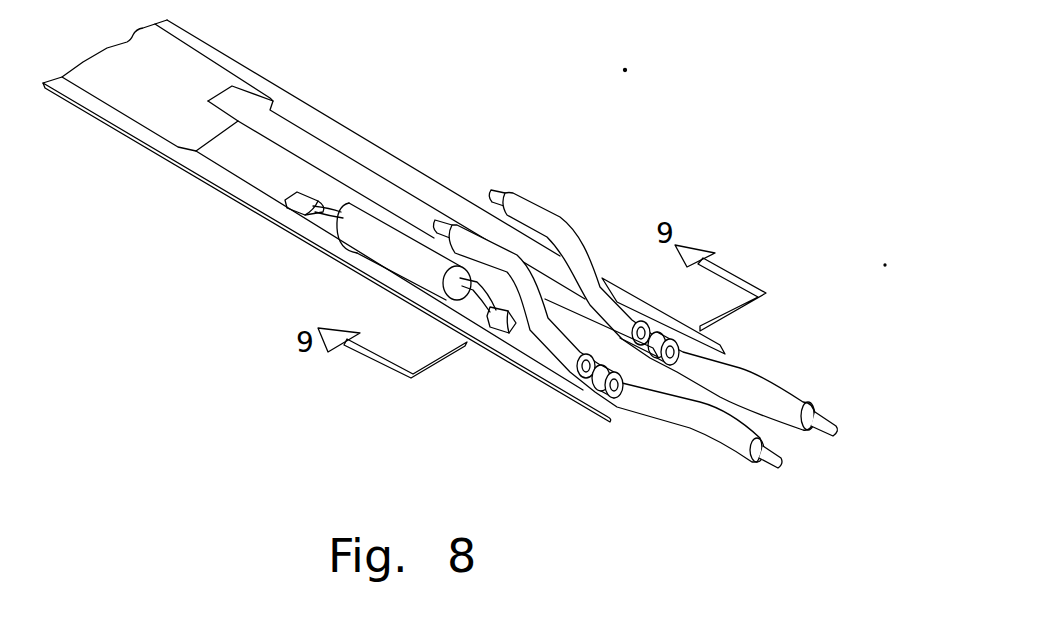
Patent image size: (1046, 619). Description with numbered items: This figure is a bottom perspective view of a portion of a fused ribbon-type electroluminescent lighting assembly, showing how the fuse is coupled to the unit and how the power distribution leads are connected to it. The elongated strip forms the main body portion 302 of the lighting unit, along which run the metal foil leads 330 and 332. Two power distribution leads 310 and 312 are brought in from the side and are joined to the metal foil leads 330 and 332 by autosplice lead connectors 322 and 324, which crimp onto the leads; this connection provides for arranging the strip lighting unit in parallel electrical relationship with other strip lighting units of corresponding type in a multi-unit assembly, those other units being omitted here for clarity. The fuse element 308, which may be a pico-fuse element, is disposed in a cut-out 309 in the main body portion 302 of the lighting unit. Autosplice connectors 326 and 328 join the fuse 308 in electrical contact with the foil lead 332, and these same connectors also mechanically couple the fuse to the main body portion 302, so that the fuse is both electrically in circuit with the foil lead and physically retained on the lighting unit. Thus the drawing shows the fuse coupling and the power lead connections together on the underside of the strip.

The main body portion 302 is at (275, 86).
The fuse element 308 is at (387, 248).
The cut-out 309 is at (407, 283).
The power distribution lead 310 is at (793, 402).
The power distribution lead 312 is at (727, 445).
The autosplice lead connector 322 is at (667, 337).
The autosplice lead connector 324 is at (593, 378).
The autosplice connector 326 is at (497, 320).
The autosplice connector 328 is at (287, 200).
The metal foil lead 330 is at (303, 147).
The metal foil lead 332 is at (230, 155).